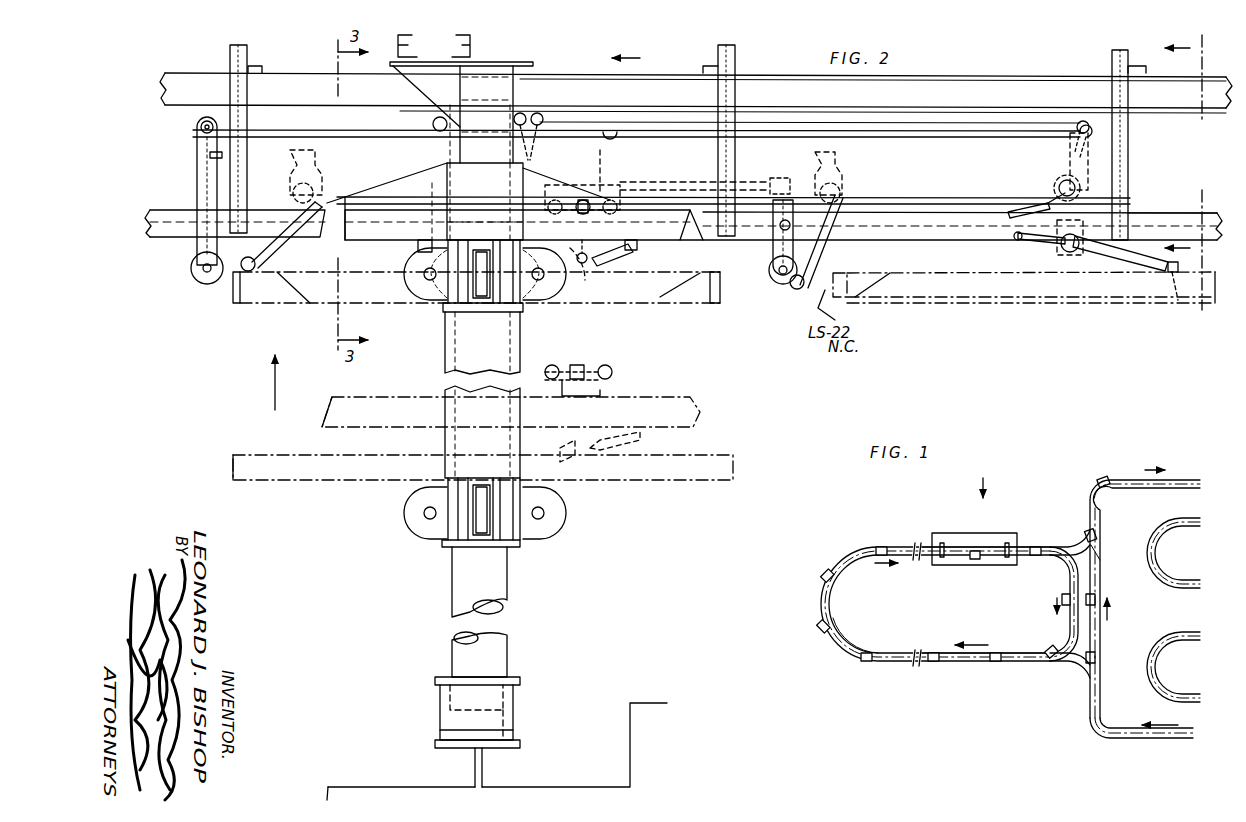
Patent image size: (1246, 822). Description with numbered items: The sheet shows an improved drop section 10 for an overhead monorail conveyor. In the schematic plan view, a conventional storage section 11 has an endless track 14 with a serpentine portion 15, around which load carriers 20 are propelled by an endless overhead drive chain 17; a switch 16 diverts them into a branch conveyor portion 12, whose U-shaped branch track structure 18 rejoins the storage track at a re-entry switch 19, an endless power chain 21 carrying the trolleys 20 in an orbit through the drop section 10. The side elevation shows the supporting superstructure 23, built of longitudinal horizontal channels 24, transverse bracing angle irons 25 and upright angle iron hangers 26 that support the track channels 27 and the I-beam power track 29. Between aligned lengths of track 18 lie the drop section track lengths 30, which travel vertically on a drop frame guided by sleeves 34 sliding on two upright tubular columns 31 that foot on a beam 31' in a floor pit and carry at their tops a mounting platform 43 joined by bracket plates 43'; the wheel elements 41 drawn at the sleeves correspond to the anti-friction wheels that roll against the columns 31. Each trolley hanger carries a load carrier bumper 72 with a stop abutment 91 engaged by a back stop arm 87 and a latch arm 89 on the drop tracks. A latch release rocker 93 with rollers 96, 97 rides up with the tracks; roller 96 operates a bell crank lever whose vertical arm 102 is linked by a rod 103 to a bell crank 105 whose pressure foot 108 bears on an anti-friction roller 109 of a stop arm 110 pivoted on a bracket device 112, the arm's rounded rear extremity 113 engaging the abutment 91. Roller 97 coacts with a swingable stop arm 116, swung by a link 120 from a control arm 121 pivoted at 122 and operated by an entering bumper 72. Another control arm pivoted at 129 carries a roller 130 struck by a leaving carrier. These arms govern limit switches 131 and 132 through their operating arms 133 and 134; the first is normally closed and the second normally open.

In FIG. 2, the drop section 10 is at (258, 305).
In FIG. 1, the drop section 10 is at (997, 533).
In FIG. 1, the storage section 11 is at (1178, 470).
In FIG. 1, the branch conveyor portion 12 is at (868, 663).
In FIG. 1, the endless track 14 is at (1100, 598).
In FIG. 2, the serpentine portion 15 is at (1186, 172).
In FIG. 1, the serpentine portion 15 is at (1168, 636).
In FIG. 1, the switch 16 is at (1082, 668).
In FIG. 1, the endless overhead drive chain 17 is at (1098, 556).
In FIG. 2, the branch track structure 18 is at (180, 230).
In FIG. 1, the branch track structure 18 is at (983, 662).
In FIG. 1, the switch 19 is at (1063, 546).
In FIG. 1, the load carriers 20 is at (832, 578).
In FIG. 1, the endless power chain 21 is at (850, 652).
In FIG. 2, the supporting superstructure 23 is at (1138, 205).
In FIG. 2, the horizontal channels 24 is at (200, 111).
In FIG. 2, the transverse bracing angle irons 25 is at (262, 70).
In FIG. 2, the upright angle iron hangers 26 is at (248, 119).
In FIG. 2, the channels 27 is at (945, 220).
In FIG. 2, the power track 29 is at (780, 92).
In FIG. 2, the track lengths 30 is at (673, 230).
In FIG. 1, the track lengths 30 is at (960, 545).
In FIG. 2, the tubular columns 31 is at (468, 341).
In FIG. 2, the beam 31' is at (497, 716).
In FIG. 2, the sleeves 34 is at (448, 350).
In FIG. 2, the rollers 41 is at (430, 292).
In FIG. 2, the mounting platform 43 is at (434, 46).
In FIG. 2, the bracket plates 43' is at (485, 55).
In FIG. 2, the load carrier bumper 72 is at (720, 305).
In FIG. 2, the back stop arm 87 is at (615, 262).
In FIG. 2, the latch arm 89 is at (585, 272).
In FIG. 2, the stop abutment 91 is at (885, 282).
In FIG. 2, the latch release rocker 93 is at (570, 198).
In FIG. 2, the operating roller 96 is at (553, 366).
In FIG. 2, the operating roller 97 is at (612, 378).
In FIG. 2, the vertically extending arm 102 is at (548, 115).
In FIG. 2, the rod or link 103 is at (830, 122).
In FIG. 2, the bell crank 105 is at (1058, 185).
In FIG. 2, the pressure foot 108 is at (1008, 217).
In FIG. 2, the anti-friction roller 109 is at (420, 248).
In FIG. 2, the latch or stop arm 110 is at (1060, 243).
In FIG. 2, the bracket device 112 is at (1060, 258).
In FIG. 2, the rounded rear extremity 113 is at (1158, 265).
In FIG. 2, the swingable stop arm 116 is at (628, 176).
In FIG. 2, the link 120 is at (672, 186).
In FIG. 2, the control arm 121 is at (775, 243).
In FIG. 2, the pivot 122 is at (780, 225).
In FIG. 2, the pivot 129 is at (202, 127).
In FIG. 2, the anti-friction roller 130 is at (195, 278).
In FIG. 2, the limit switch 131 is at (850, 180).
In FIG. 2, the limit switch 132 is at (322, 190).
In FIG. 2, the switch operating arm 133 is at (813, 262).
In FIG. 2, the switch operating arm 134 is at (270, 242).